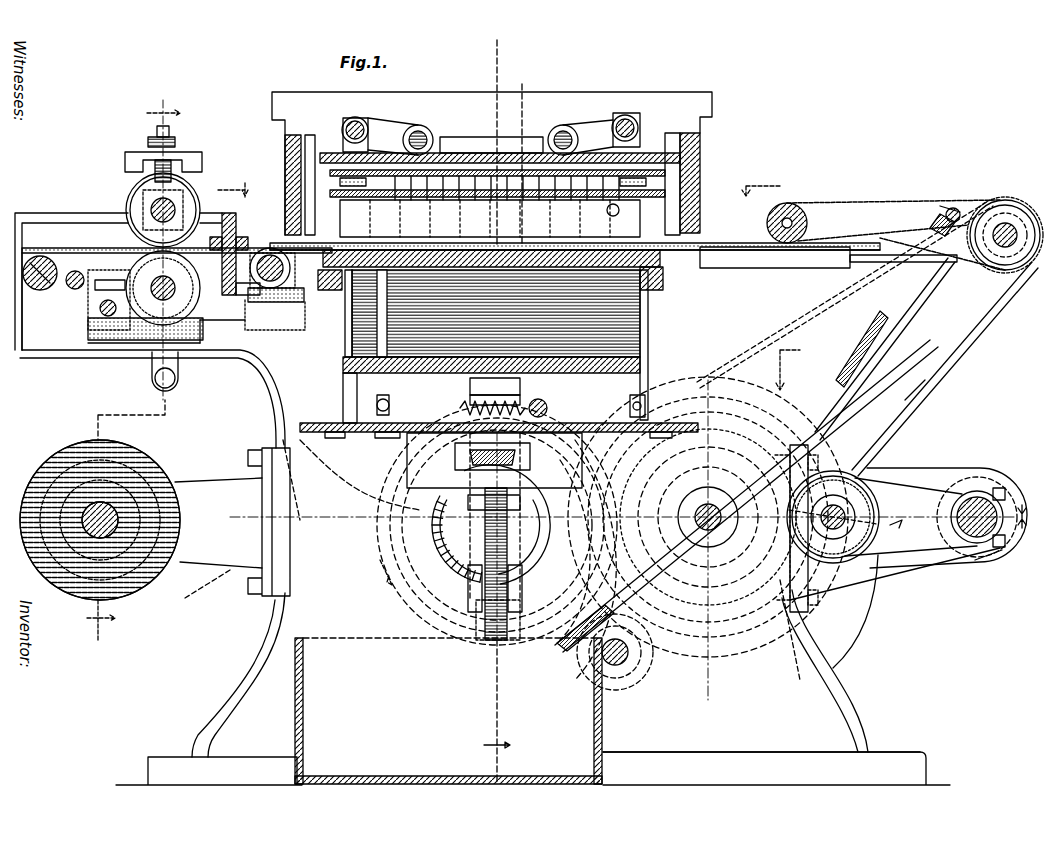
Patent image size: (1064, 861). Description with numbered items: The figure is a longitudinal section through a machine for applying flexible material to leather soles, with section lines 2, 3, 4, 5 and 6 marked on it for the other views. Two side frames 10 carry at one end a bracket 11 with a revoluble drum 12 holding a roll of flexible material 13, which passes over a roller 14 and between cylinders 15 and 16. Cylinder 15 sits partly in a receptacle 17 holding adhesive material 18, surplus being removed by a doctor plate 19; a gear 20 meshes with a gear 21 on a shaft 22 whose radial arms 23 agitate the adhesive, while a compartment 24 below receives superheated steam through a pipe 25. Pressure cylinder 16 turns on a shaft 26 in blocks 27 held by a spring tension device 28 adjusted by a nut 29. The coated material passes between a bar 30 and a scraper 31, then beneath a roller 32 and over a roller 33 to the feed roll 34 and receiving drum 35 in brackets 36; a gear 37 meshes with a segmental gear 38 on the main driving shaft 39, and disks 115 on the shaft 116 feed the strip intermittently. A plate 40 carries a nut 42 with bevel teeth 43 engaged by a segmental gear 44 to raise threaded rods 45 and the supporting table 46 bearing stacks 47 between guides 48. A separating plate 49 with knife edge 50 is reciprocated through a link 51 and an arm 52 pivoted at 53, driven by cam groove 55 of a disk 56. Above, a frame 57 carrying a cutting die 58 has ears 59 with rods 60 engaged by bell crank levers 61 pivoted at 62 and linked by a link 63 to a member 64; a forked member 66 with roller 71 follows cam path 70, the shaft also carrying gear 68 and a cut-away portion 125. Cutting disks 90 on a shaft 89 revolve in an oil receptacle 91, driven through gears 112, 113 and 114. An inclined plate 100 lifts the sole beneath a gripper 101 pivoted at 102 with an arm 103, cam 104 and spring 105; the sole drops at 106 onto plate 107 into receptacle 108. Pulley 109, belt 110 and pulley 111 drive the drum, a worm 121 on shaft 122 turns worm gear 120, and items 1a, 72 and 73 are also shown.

The arm 1a is at (923, 382).
The section line 2— 2 is at (478, 66).
The section line 3— 3 is at (133, 370).
The section line 4— 4 is at (794, 369).
The section line 5— 5 is at (605, 558).
The section line 6— 6 is at (501, 189).
The side frames 10 is at (258, 650).
The bracket 11 is at (216, 478).
The revoluble drum 12 is at (150, 476).
The flexible material 13 is at (66, 450).
The roller 14 is at (40, 290).
The cylinder 15 is at (120, 280).
The cylinder 16 is at (128, 200).
The receptacle 17 is at (215, 330).
The adhesive material 18 is at (190, 300).
The doctor plate 19 is at (98, 280).
The gear 20 is at (180, 360).
The gear 21 is at (72, 340).
The revoluble shaft 22 is at (108, 320).
The radial arms 23 is at (120, 345).
The compartment 24 is at (150, 345).
The pipe 25 is at (144, 420).
The revoluble shaft 26 is at (195, 182).
The blocks 27 is at (135, 190).
The spring tension device 28 is at (182, 143).
The adjusting nut 29 is at (152, 140).
The bar 30 is at (236, 230).
The scraper 31 is at (240, 268).
The revoluble roller 32 is at (800, 210).
The revoluble roller 33 is at (1018, 262).
The feed roll 34 is at (860, 475).
The receiving drum 35 is at (980, 490).
The brackets 36 is at (920, 475).
The gear 37 is at (865, 639).
The segmental gear 38 is at (700, 640).
The main driving shaft 39 is at (720, 535).
The plate 40 is at (650, 408).
The nut 42 is at (440, 470).
The bevel gear teeth 43 is at (410, 470).
The segmental gear 44 is at (446, 545).
The threaded rod 45 is at (492, 640).
The supporting table 46 is at (350, 380).
The stacks 47 is at (340, 326).
The vertical guides 48 is at (330, 345).
The separating plate 49 is at (660, 270).
The knife edge 50 is at (477, 286).
The link 51 is at (510, 245).
The arm 52 is at (660, 680).
The pivot 53 is at (612, 670).
The cam groove 55 is at (735, 670).
The disk / vertical guides 56 is at (700, 153).
The vertically movable frame 57 is at (660, 135).
The cutting die 58 is at (680, 200).
The ears 59 is at (390, 118).
The parallel rods 60 is at (628, 118).
The bell crank lever 61 is at (600, 122).
The pivot 62 is at (570, 124).
The link 63 is at (522, 245).
The member 64 is at (565, 640).
The forked member 66 is at (470, 580).
The gear 68 is at (402, 590).
The cam path 70 is at (540, 560).
The stud or roller 71 is at (392, 530).
The plate 72 is at (340, 170).
The side plate 73 is at (720, 178).
The revoluble shaft 89 is at (275, 235).
The cutting disks 90 is at (262, 240).
The receptacle 91 is at (266, 305).
The inclined plate 100 is at (940, 236).
The gripper 101 is at (944, 205).
The pivot 102 is at (960, 210).
The arm 103 is at (965, 272).
The cam 104 is at (1000, 300).
The spring 105 is at (1000, 202).
The dropped sole position 106 is at (815, 322).
The plate / incline 107 is at (790, 440).
The receptacle 108 is at (452, 736).
The pulley 109 is at (982, 560).
The belt 110 is at (928, 575).
The pulley 111 is at (740, 746).
The gear 112 is at (800, 638).
The intermediate gear 113 is at (622, 478).
The gear 114 is at (262, 386).
The disks 115 is at (835, 470).
The shaft 116 is at (840, 540).
The worm gear 120 is at (471, 396).
The worm 121 is at (535, 395).
The shaft 122 is at (548, 407).
The cut-away portion 125 is at (480, 656).